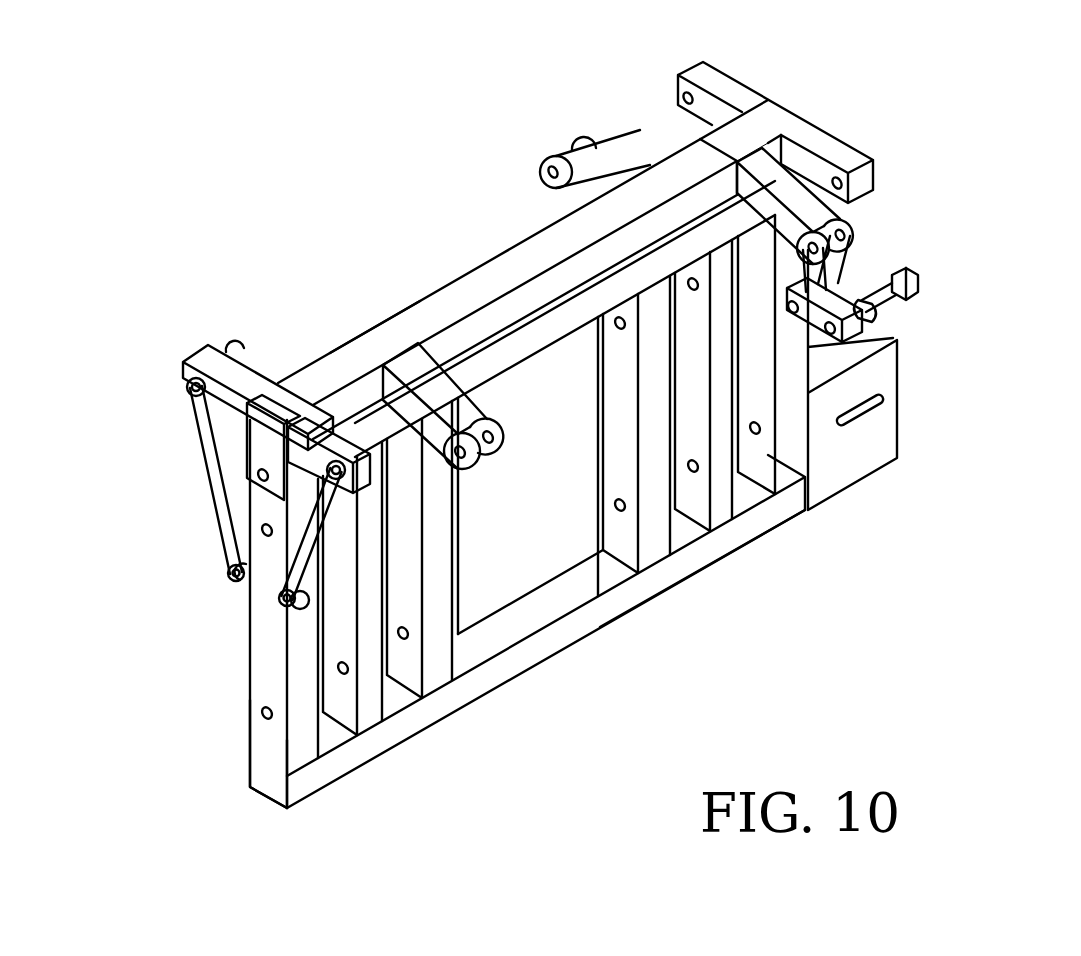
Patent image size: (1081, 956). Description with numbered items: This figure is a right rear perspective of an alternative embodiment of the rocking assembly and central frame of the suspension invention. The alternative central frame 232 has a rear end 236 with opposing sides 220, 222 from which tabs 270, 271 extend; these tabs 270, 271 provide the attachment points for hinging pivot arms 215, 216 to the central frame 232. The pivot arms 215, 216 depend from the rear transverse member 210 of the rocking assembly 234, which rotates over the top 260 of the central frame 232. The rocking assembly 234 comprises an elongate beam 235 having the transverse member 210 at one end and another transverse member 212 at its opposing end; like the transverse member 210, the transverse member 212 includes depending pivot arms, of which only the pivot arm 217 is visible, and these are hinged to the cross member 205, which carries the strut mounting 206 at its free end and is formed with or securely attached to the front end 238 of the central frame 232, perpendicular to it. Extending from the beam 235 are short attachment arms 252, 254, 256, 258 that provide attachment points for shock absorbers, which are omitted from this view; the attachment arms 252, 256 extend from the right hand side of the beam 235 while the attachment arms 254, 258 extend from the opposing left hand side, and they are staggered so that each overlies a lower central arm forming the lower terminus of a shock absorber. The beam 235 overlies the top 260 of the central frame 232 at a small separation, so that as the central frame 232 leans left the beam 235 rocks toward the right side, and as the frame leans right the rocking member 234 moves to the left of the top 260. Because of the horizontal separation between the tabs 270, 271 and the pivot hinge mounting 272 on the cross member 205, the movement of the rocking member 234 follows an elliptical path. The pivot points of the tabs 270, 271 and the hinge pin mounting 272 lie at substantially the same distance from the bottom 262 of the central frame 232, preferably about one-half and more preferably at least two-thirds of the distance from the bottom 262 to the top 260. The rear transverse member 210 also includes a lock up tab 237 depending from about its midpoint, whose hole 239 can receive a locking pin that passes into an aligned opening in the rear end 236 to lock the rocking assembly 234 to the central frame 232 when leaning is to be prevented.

The cross member 205 is at (907, 282).
The strut mounting 206 is at (887, 315).
The transverse member 210 is at (205, 362).
The transverse member 212 is at (745, 80).
The pivot arm 215 is at (205, 480).
The pivot arm 216 is at (330, 540).
The pivot arm 217 is at (832, 257).
The side of rear end 220 is at (250, 735).
The side of rear end 222 is at (290, 748).
The central frame 232 is at (490, 678).
The rocking assembly 234 is at (395, 300).
The elongate beam 235 is at (530, 262).
The rear end 236 is at (263, 665).
The lock up tab 237 is at (283, 490).
The front end 238 is at (815, 365).
The hole 239 is at (258, 476).
The attachment arm 252 is at (498, 408).
The attachment arm 254 is at (292, 347).
The attachment arm 256 is at (793, 190).
The attachment arm 258 is at (628, 148).
The top of central frame 260 is at (565, 318).
The bottom of central frame 262 is at (690, 578).
The tab 270 is at (242, 590).
The tab 271 is at (305, 610).
The pivot hinge mounting 272 is at (795, 318).